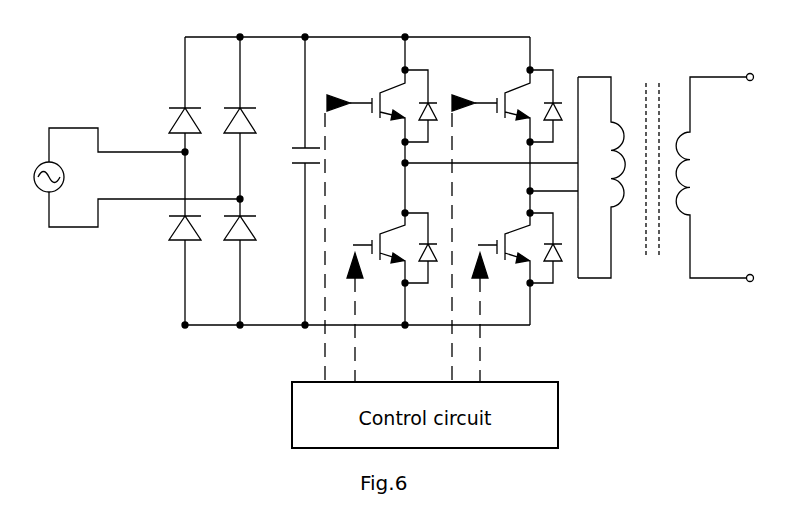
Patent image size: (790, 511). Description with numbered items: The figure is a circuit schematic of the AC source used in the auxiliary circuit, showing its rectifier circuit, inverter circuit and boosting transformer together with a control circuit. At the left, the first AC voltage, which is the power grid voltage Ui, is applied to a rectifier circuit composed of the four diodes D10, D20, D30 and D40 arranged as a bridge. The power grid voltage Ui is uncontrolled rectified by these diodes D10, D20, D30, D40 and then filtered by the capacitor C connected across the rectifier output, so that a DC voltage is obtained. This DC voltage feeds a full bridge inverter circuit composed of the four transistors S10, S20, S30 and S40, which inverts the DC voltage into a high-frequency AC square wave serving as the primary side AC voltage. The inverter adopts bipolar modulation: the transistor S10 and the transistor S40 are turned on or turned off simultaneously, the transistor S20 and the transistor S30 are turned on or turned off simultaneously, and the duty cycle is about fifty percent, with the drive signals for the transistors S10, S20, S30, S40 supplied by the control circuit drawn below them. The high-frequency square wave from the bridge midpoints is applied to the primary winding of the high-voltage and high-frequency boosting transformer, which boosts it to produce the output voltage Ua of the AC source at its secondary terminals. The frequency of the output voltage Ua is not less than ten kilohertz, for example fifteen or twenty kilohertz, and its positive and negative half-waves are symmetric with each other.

The power grid voltage Ui is at (126, 177).
The diode D10 is at (175, 111).
The diode D20 is at (175, 240).
The diode D30 is at (251, 240).
The diode D40 is at (251, 111).
The capacitor C is at (295, 181).
The transistor S10 is at (381, 209).
The transistor S20 is at (392, 272).
The transistor S30 is at (507, 209).
The transistor S40 is at (517, 286).
The output voltage Ua is at (714, 178).